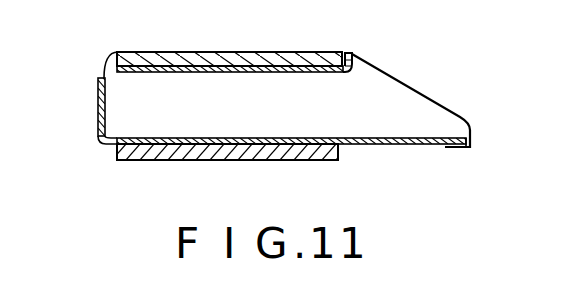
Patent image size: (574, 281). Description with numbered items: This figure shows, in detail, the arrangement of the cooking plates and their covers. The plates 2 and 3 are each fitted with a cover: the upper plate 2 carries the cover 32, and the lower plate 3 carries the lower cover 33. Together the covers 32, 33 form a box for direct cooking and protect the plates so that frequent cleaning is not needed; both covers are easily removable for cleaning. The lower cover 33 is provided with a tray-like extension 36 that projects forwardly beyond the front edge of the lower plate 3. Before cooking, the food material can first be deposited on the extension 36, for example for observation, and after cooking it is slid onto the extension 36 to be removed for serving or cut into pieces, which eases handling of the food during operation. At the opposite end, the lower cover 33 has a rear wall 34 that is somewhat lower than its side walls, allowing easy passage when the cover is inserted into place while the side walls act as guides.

The plate 2 is at (299, 63).
The lower plate 3 is at (316, 150).
The cover 32 is at (352, 54).
The lower cover 33 is at (424, 95).
The rear wall 34 is at (98, 108).
The extension 36 is at (445, 148).